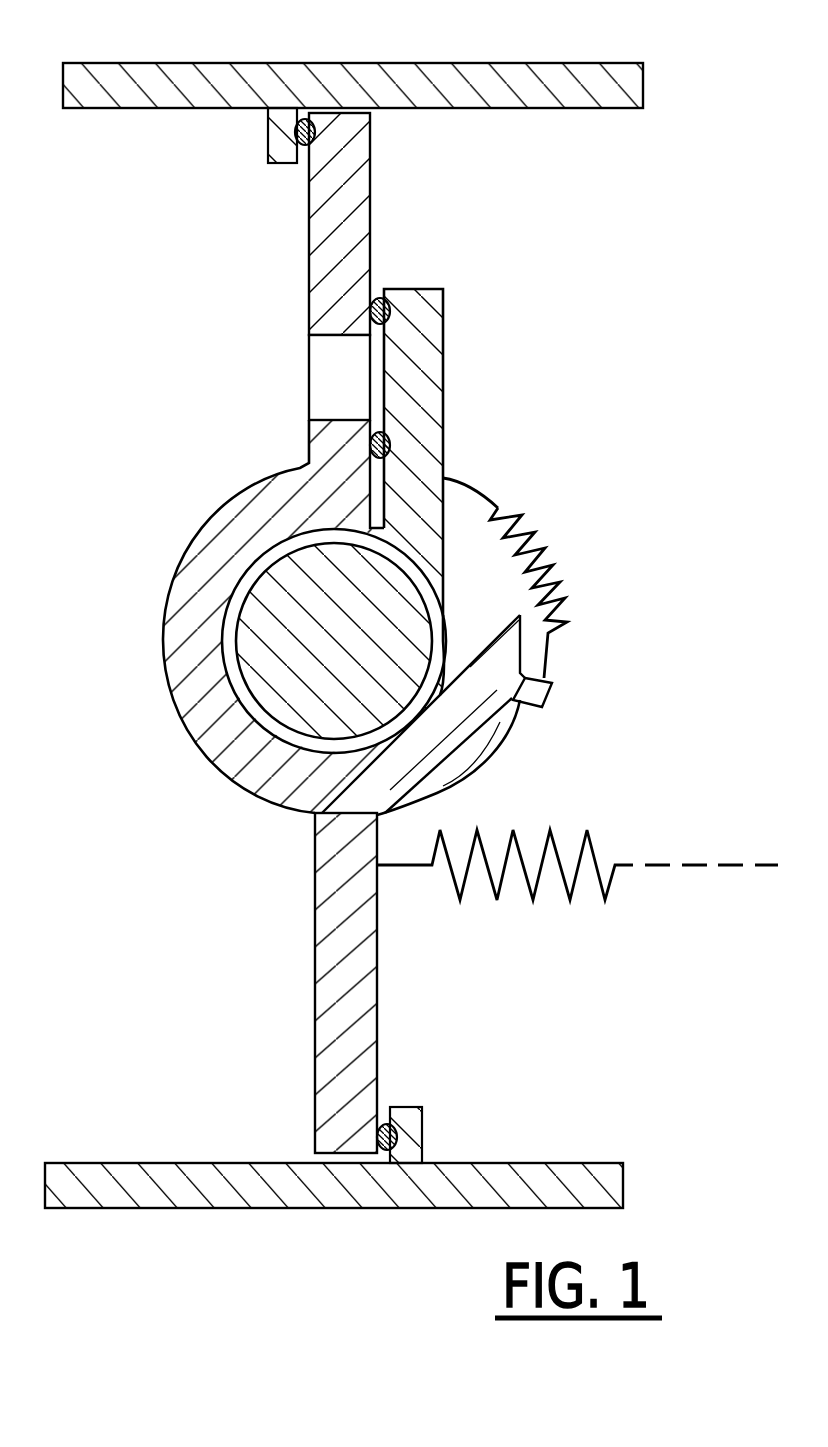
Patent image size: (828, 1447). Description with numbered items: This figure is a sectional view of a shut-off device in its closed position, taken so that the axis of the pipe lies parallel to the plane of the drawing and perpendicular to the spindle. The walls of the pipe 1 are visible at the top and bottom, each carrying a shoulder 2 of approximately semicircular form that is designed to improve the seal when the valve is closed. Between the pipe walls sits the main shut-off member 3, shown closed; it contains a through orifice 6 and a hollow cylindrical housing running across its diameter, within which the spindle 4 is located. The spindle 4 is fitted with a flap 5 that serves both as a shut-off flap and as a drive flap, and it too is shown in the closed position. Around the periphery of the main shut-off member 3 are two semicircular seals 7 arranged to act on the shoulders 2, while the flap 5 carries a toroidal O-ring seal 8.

The walls of the pipe 1 is at (567, 97).
The shoulders 2 is at (268, 137).
The main shut-off member 3 is at (330, 987).
The spindle 4 is at (342, 652).
The flap 5 is at (430, 472).
The through orifice 6 is at (322, 388).
The seals 7 is at (306, 118).
The toroidal O-ring seal 8 is at (384, 300).